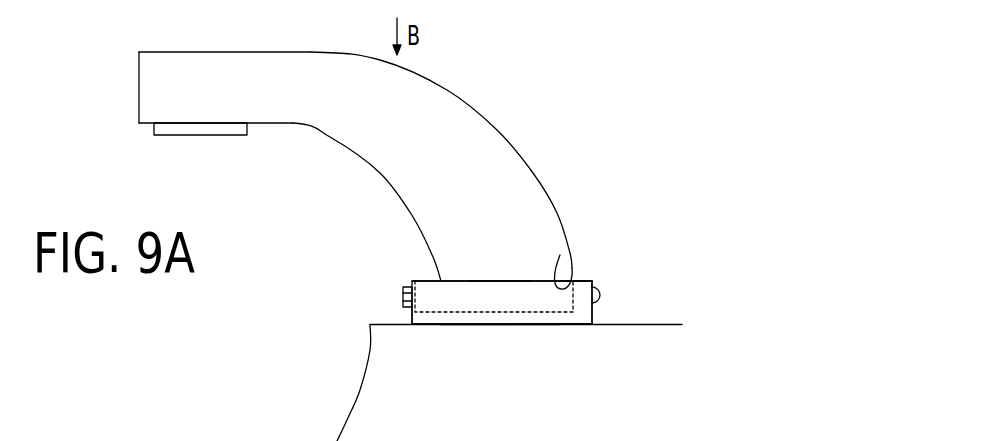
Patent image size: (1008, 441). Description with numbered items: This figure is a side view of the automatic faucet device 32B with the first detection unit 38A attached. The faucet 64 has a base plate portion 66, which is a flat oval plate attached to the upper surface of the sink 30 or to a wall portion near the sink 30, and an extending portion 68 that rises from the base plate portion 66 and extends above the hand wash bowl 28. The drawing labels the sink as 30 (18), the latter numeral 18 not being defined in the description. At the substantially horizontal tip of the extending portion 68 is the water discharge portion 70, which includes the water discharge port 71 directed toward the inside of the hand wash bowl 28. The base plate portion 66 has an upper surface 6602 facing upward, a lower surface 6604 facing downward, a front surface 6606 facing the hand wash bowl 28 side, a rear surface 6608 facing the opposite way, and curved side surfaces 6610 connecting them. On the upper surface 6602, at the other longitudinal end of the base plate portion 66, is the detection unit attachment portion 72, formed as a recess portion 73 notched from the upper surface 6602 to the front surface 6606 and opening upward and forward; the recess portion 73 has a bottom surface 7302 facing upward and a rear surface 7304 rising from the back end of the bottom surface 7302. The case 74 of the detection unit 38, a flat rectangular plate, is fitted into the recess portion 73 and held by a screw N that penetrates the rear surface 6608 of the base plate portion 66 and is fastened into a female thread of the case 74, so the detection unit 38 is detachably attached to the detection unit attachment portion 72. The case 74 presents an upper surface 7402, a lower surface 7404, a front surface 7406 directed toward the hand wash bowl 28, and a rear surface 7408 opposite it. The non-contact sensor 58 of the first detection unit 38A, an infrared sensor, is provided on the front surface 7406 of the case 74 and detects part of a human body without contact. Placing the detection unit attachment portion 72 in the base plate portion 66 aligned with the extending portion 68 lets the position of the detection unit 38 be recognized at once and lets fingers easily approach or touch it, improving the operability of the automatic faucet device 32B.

The water discharge portion 70 is at (203, 52).
The water discharge port 71 is at (199, 136).
The automatic faucet device 32B is at (683, 50).
The first detection unit 38A is at (446, 170).
The detection unit 38 is at (446, 170).
The case 74 is at (446, 170).
The faucet 64 is at (518, 145).
The extending portion 68 is at (455, 160).
The rear surface 7304 is at (575, 272).
The recess portion 73 is at (491, 283).
The detection unit attachment portion 72 is at (437, 302).
The bottom surface 7302 is at (515, 311).
The upper surface 7402 is at (465, 280).
The upper surface 6602 is at (500, 280).
The base plate portion 66 is at (582, 280).
The rear surface 7408 is at (592, 280).
The screw N is at (602, 296).
The non-contact sensor 58 is at (356, 279).
The front surface 7406 is at (403, 299).
The front surface 6606 is at (410, 322).
The lower surface 7404 is at (472, 313).
The side surfaces 6610 is at (539, 320).
The rear surface 6608 is at (593, 317).
The sink 30 is at (522, 355).
The base body 18 is at (664, 324).
The lower surface 6604 is at (500, 325).
The hand wash bowl 28 is at (347, 420).